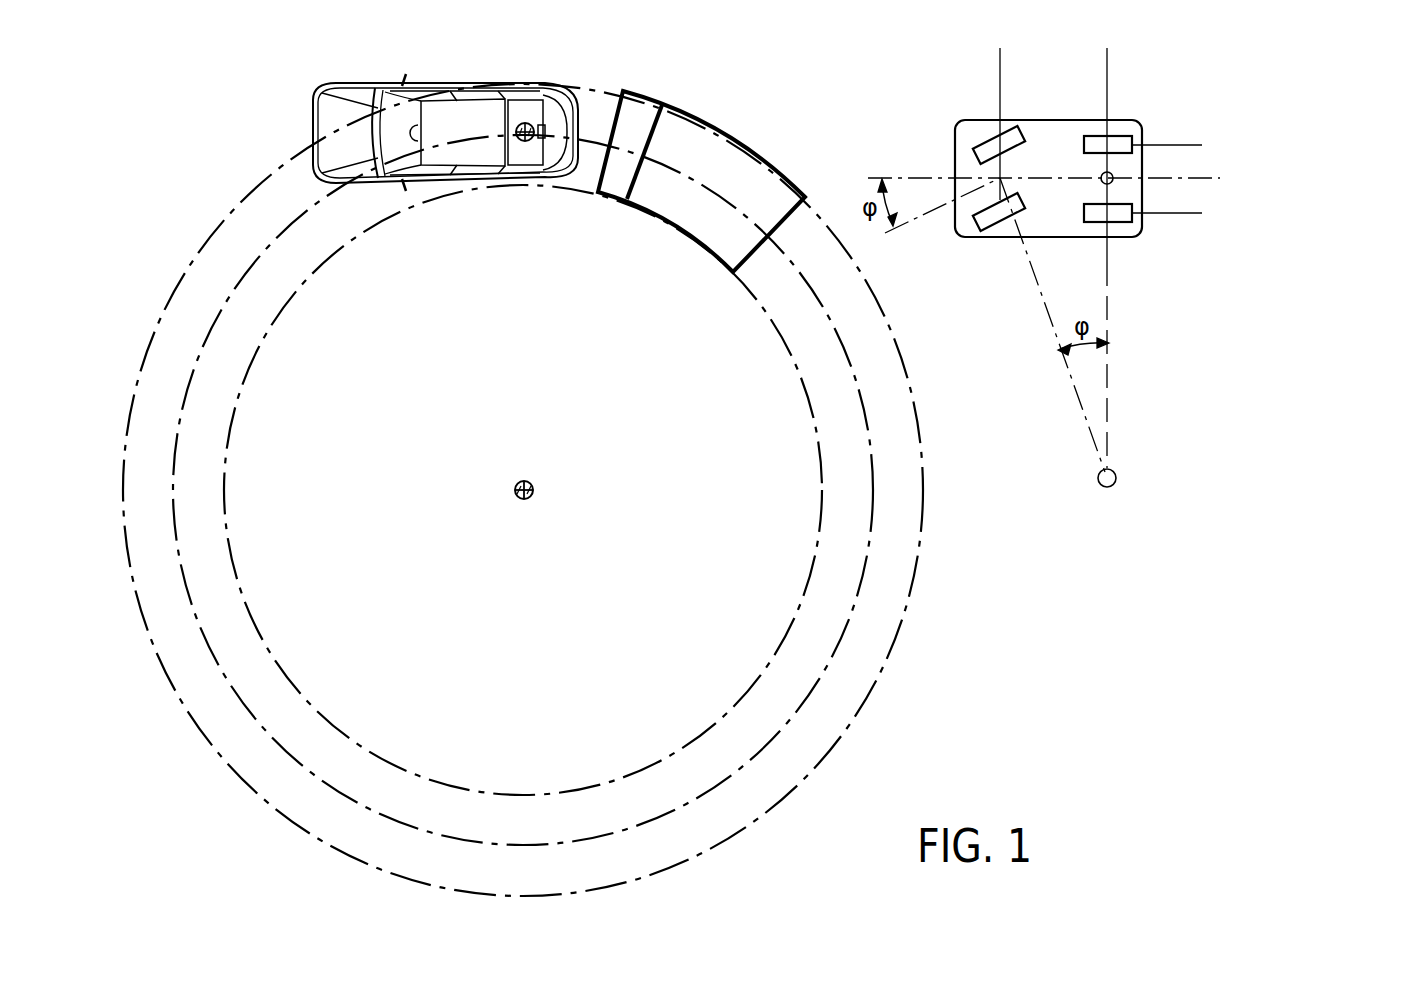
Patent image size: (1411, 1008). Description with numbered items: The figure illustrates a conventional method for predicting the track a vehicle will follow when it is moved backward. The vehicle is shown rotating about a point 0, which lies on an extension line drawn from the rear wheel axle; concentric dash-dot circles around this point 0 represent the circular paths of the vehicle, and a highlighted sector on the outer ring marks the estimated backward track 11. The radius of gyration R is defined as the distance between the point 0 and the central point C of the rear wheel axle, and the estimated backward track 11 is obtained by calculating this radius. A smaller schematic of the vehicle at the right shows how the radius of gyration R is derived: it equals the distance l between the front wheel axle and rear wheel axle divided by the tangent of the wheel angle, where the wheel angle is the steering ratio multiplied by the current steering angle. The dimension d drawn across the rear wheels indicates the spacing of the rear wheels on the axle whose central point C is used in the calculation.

The estimated backward track 11 is at (747, 143).
The central point of the rear wheel axle C is at (524, 481).
The point O 0 is at (825, 491).
The radius of gyration R is at (1122, 365).
The tread (rear wheel spacing) d is at (1193, 213).
The distance between the front wheel axle and rear wheel axle l is at (1107, 60).